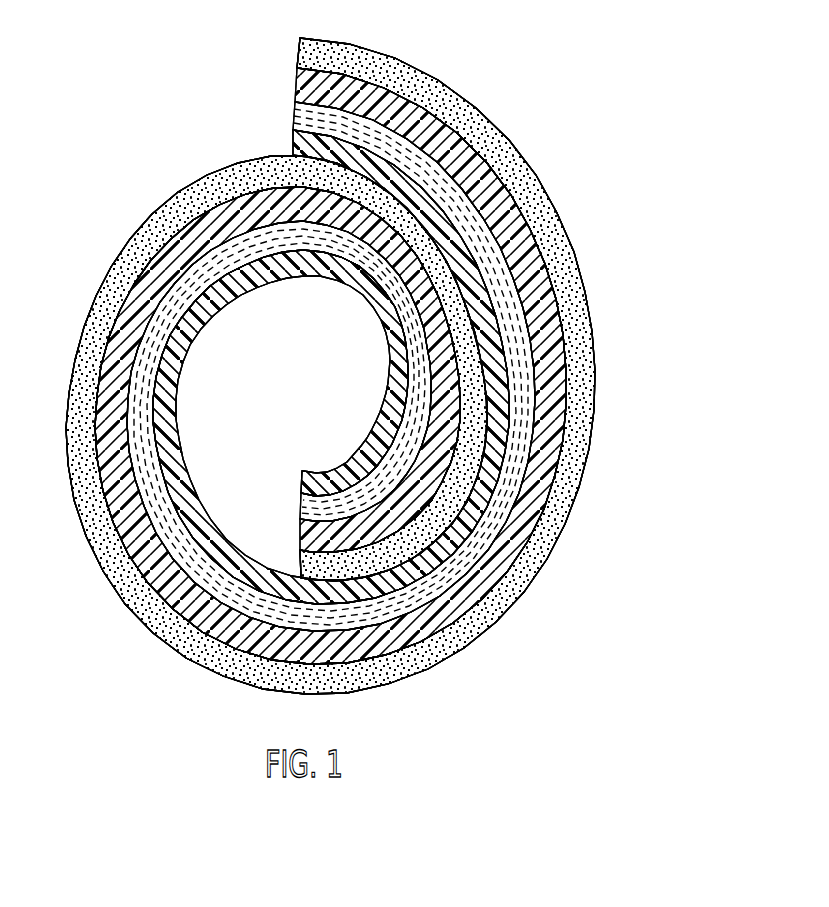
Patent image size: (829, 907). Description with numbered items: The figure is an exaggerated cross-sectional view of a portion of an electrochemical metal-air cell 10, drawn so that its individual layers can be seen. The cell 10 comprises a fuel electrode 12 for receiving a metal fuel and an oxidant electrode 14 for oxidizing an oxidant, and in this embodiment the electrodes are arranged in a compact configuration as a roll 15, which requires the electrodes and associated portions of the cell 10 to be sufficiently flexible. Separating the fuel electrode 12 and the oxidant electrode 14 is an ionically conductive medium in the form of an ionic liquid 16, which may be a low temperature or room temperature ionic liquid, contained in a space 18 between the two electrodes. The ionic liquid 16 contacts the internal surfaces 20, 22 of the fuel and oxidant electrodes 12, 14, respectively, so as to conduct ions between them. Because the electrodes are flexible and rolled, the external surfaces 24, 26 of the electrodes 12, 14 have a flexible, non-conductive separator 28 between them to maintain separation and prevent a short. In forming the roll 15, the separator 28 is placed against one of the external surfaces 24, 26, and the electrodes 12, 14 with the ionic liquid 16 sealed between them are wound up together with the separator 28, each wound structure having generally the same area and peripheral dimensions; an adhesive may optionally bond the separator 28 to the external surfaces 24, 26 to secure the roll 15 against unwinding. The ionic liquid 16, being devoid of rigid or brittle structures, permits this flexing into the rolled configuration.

The electrochemical metal-air cell 10 is at (640, 69).
The fuel electrode 12 is at (177, 333).
The oxidant electrode 14 is at (323, 663).
The roll 15 is at (297, 37).
The ionic liquid 16 is at (140, 383).
The space 18 is at (293, 260).
The internal surface 20 is at (327, 259).
The internal surface 22 is at (345, 243).
The external surface 24 is at (412, 215).
The external surface 26 is at (362, 180).
The separator 28 is at (185, 198).